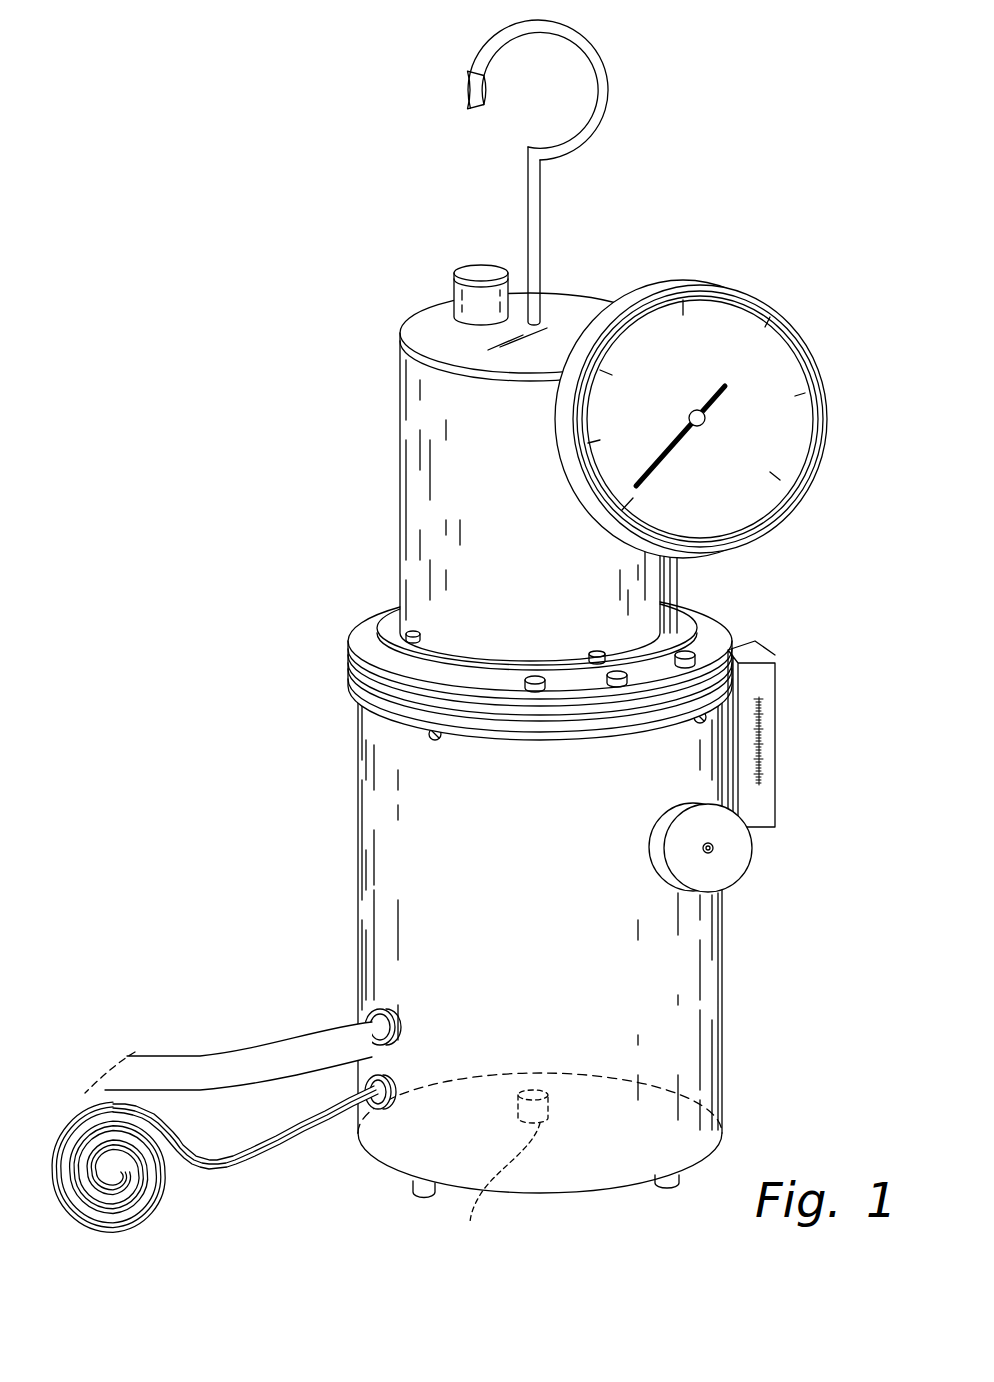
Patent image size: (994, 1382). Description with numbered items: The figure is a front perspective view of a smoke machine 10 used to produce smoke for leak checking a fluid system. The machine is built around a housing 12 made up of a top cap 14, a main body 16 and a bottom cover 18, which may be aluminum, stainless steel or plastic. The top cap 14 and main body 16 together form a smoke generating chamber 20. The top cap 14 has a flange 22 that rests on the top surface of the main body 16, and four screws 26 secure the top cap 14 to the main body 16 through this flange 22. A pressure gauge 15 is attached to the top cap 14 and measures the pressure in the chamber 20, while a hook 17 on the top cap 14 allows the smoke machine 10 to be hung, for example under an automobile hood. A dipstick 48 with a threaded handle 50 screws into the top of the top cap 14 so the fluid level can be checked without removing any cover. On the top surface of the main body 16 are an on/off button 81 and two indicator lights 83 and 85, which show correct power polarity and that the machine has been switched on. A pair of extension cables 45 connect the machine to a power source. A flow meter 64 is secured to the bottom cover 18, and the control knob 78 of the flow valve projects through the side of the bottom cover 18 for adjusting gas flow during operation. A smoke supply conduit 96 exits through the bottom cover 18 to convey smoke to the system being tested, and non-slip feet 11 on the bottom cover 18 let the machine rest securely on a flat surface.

The smoke machine 10 is at (692, 127).
The non-slip feet 11 is at (668, 1185).
The housing 12 is at (326, 673).
The top cap 14 is at (400, 421).
The pressure gauge 15 is at (737, 288).
The main body 16 is at (348, 646).
The hook 17 is at (488, 44).
The bottom cover 18 is at (357, 825).
The smoke generating chamber 20 is at (488, 488).
The flange 22 is at (387, 613).
The screws 26 is at (590, 656).
The extension cables 45 is at (278, 1135).
The dipstick 48 is at (430, 273).
The handle 50 is at (472, 267).
The flow meter 64 is at (778, 678).
The control knob 78 is at (660, 855).
The on/off button 81 is at (617, 687).
The indicator light 83 is at (535, 690).
The indicator light 85 is at (690, 655).
The smoke supply conduit 96 is at (232, 1052).